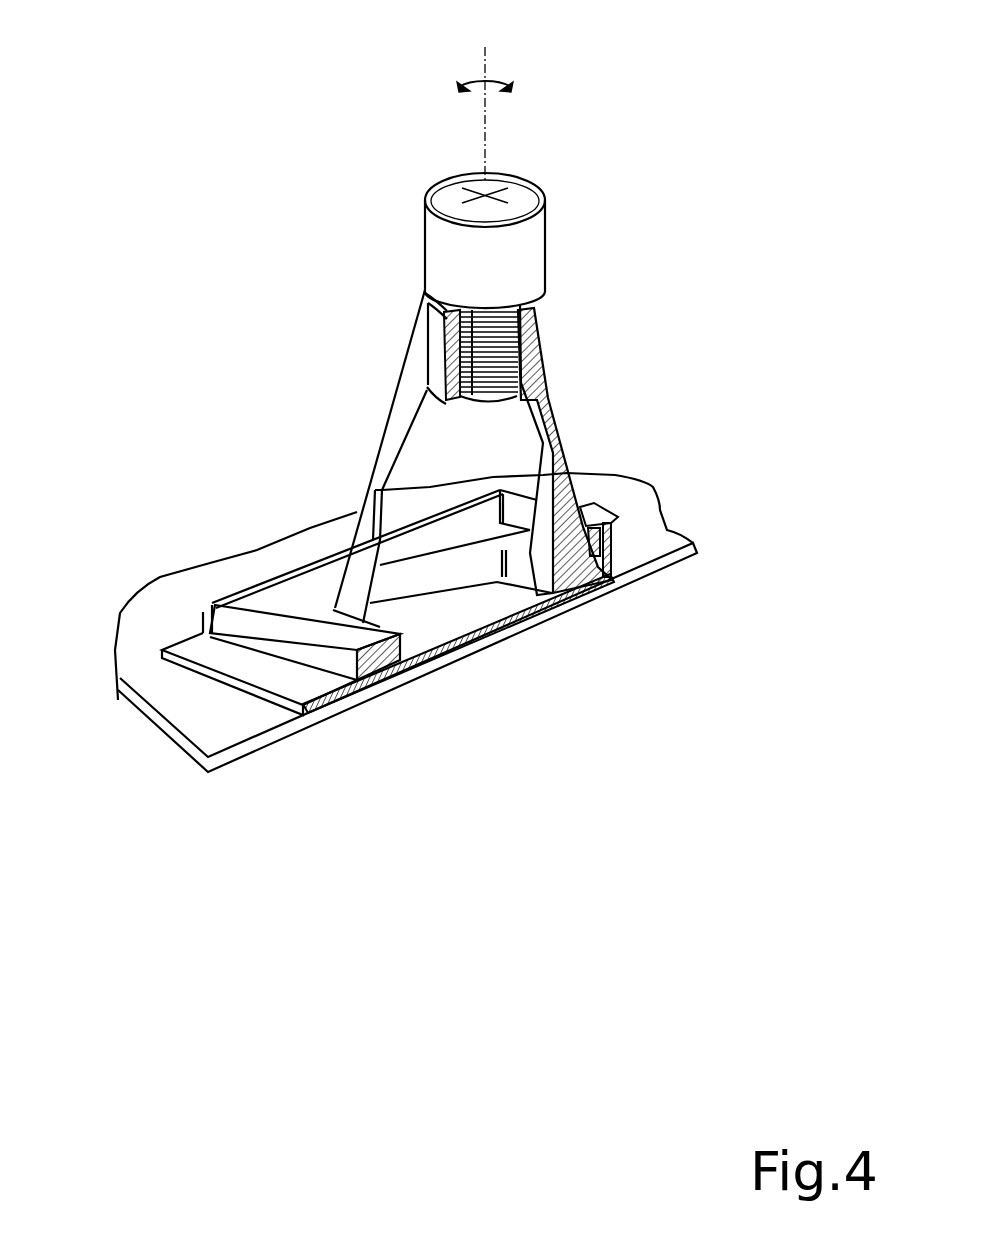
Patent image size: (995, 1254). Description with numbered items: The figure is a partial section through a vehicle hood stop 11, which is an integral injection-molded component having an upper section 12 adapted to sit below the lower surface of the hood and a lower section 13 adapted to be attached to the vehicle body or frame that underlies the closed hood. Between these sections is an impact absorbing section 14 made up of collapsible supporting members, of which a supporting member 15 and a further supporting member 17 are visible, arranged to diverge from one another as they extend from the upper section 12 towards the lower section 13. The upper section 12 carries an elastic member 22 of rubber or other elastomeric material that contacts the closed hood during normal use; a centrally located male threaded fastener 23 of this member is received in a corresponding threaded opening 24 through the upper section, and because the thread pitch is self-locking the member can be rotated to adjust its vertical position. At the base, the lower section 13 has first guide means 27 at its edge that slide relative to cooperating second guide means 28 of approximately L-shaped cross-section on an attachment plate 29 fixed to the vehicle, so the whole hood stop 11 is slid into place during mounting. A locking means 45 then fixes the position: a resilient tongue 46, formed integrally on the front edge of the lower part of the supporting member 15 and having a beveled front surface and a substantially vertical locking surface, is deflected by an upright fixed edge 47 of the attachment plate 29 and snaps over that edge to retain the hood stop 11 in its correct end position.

The hood stop 11 is at (300, 108).
The upper section 12 is at (541, 334).
The lower section 13 is at (283, 603).
The impact absorbing section 14 is at (565, 447).
The supporting member 15 is at (553, 403).
The supporting member 17 is at (377, 470).
The elastic member 22 is at (535, 236).
The threaded fastener 23 is at (545, 316).
The threaded opening 24 is at (452, 340).
The first guide means 27 is at (213, 608).
The second guide means 28 is at (203, 627).
The attachment plate 29 is at (328, 696).
The locking means 45 is at (634, 522).
The resilient tongue 46 is at (600, 506).
The fixed edge 47 is at (613, 560).